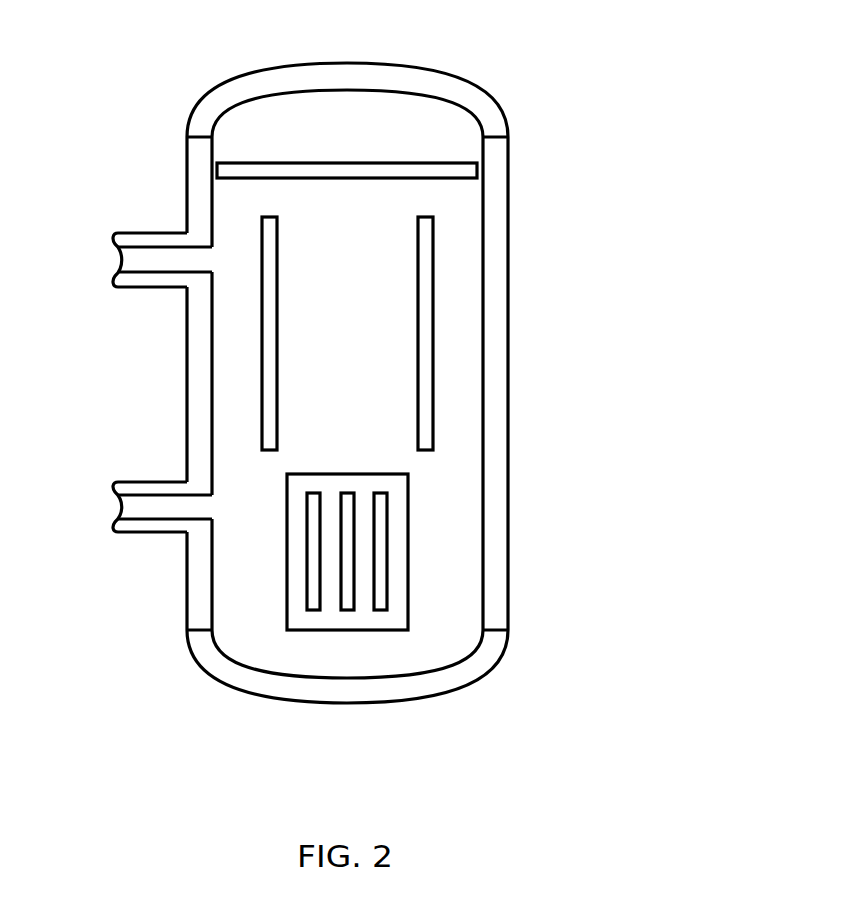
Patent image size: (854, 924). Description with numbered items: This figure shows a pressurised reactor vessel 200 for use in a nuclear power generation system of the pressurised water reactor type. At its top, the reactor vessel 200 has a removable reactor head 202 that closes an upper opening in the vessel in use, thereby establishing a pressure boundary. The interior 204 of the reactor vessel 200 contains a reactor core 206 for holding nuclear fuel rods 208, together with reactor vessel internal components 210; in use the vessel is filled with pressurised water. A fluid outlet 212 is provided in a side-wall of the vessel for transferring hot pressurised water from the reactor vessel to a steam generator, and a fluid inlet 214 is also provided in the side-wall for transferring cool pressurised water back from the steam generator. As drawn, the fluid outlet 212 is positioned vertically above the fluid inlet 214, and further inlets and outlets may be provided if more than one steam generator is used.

The reactor vessel 200 is at (584, 74).
The reactor head 202 is at (430, 66).
The interior 204 is at (450, 556).
The reactor core 206 is at (382, 620).
The nuclear fuel rods 208 is at (313, 612).
The reactor vessel internal components 210 is at (260, 162).
The fluid outlet 212 is at (151, 240).
The fluid inlet 214 is at (151, 484).